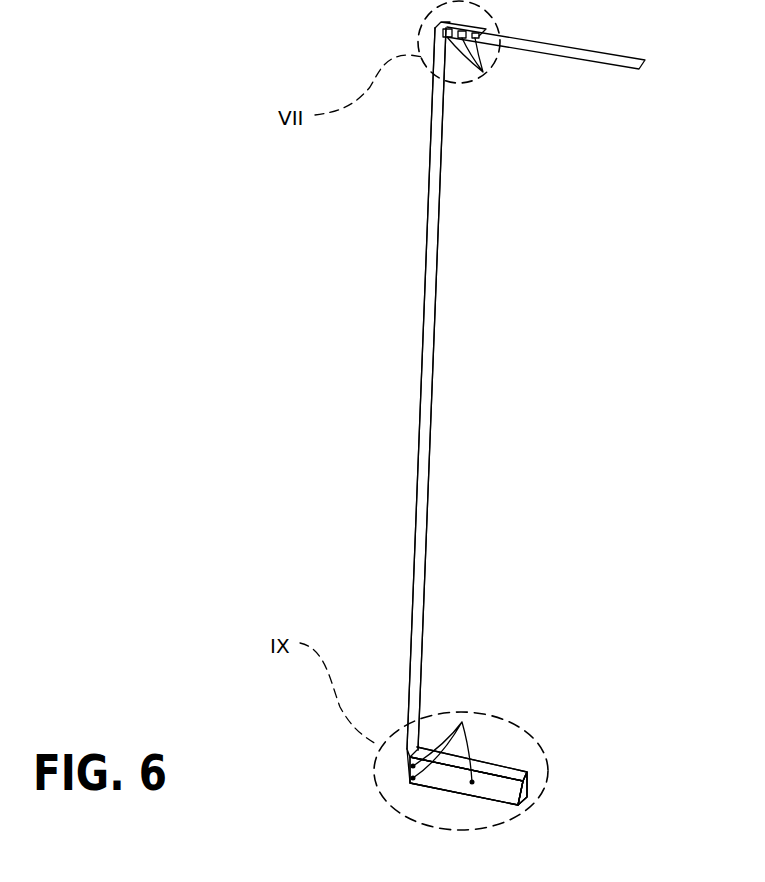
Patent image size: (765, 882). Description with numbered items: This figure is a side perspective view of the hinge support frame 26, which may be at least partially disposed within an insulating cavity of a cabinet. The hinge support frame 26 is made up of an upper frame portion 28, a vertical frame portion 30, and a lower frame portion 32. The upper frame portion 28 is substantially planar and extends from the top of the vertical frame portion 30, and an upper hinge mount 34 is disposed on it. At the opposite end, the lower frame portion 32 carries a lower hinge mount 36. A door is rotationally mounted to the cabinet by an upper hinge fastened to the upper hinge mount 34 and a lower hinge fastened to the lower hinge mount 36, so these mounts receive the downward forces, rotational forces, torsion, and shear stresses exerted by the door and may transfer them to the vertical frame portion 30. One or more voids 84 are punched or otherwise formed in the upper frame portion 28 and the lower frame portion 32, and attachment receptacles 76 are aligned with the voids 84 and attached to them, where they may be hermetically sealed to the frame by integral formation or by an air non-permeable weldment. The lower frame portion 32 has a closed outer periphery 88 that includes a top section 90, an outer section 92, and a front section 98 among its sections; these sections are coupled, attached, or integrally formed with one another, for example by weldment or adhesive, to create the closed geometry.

The hinge support frame 26 is at (425, 308).
The upper frame portion 28 is at (612, 45).
The vertical frame portion 30 is at (420, 248).
The lower frame portion 32 is at (441, 800).
The upper hinge mount 34 is at (467, 26).
The lower hinge mount 36 is at (442, 773).
The attachment receptacles 76 is at (483, 72).
The voids 84 is at (462, 722).
The closed outer periphery 88 is at (537, 762).
The top section 90 is at (508, 773).
The outer section 92 is at (527, 787).
The front section 98 is at (497, 790).